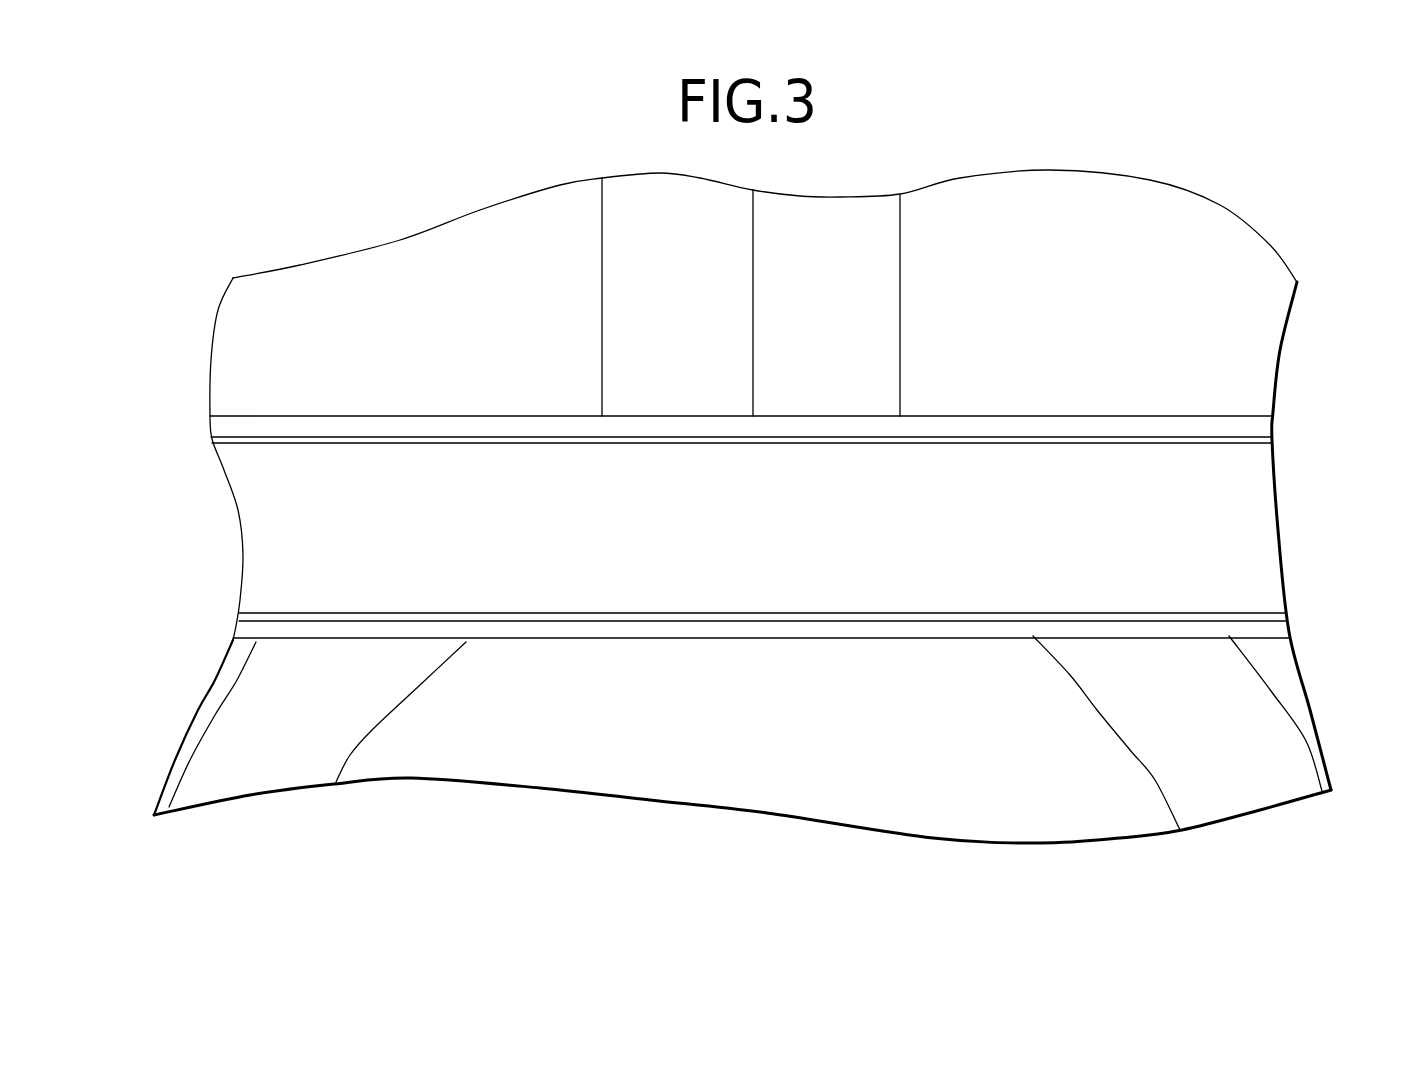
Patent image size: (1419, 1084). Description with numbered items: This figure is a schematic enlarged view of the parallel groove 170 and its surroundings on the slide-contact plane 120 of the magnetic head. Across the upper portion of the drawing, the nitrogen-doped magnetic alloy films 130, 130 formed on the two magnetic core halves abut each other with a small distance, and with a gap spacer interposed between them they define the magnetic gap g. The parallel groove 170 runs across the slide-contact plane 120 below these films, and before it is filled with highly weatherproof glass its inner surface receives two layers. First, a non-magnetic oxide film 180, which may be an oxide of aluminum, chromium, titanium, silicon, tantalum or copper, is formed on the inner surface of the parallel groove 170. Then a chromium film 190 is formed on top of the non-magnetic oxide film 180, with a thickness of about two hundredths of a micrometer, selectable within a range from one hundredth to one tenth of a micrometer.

The slide-contact plane 120 is at (1112, 230).
The nitrogen-doped magnetic alloy film 130 is at (705, 271).
The parallel groove 170 is at (1310, 497).
The non-magnetic oxide film 180 is at (313, 432).
The chromium film 190 is at (341, 441).
The magnetic gap g is at (753, 355).